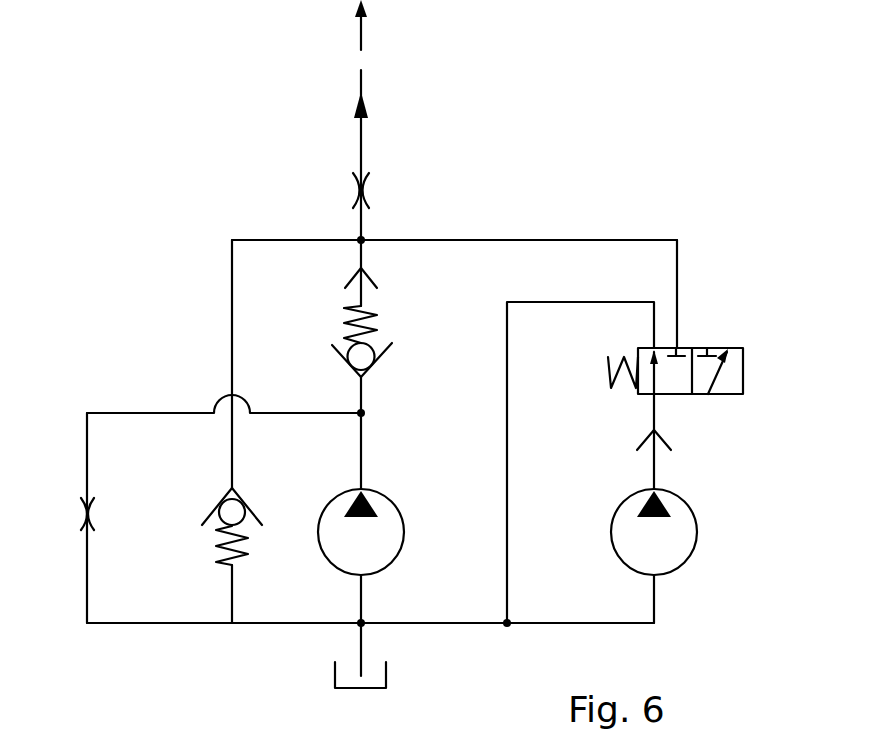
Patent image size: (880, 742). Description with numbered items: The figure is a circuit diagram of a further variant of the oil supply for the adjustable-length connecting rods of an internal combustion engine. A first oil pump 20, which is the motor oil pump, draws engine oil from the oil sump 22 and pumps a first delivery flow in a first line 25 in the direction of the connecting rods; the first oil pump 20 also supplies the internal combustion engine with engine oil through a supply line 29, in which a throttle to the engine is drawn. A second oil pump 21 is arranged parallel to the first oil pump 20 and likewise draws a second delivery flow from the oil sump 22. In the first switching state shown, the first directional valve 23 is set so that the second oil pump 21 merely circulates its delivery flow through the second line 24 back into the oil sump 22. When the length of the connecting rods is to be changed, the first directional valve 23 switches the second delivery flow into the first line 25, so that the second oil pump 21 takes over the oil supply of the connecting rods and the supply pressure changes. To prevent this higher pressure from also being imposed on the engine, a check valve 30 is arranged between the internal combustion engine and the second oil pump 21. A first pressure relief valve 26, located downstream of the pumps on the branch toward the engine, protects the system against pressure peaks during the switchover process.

The first oil pump 20 is at (405, 530).
The second oil pump 21 is at (699, 530).
The oil sump 22 is at (333, 671).
The first directional valve 23 is at (724, 348).
The second line 24 is at (507, 401).
The first line 25 is at (360, 152).
The first pressure relief valve 26 is at (207, 521).
The supply line 29 is at (131, 412).
The check valve 30 is at (394, 346).